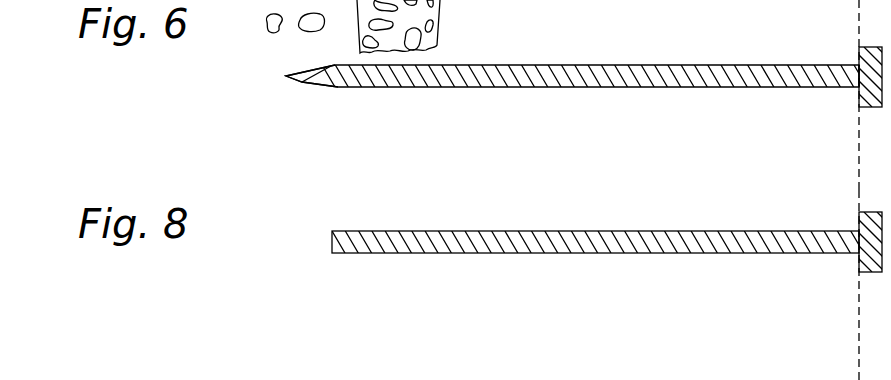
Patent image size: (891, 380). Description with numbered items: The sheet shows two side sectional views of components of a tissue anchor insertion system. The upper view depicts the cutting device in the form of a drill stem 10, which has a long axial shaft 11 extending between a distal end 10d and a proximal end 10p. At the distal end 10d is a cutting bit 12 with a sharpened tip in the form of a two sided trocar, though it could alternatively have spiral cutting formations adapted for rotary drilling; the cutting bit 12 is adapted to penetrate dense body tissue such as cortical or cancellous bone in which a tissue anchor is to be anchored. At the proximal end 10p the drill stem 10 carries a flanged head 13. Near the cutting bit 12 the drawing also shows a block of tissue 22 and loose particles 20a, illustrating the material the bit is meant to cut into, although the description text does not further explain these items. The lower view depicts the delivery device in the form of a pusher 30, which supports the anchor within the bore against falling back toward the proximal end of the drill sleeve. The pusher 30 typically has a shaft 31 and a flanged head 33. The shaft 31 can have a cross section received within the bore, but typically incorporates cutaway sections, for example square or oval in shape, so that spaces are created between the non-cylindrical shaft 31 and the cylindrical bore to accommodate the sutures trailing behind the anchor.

In FIG. 6, the drill stem 10 is at (615, 55).
In FIG. 6, the long axial shaft 11 is at (541, 78).
In FIG. 6, the cutting bit 12 is at (300, 81).
In FIG. 6, the flanged head 13 is at (859, 48).
In FIG. 6, the distal end 10d is at (314, 109).
In FIG. 6, the proximal end 10p is at (837, 102).
In FIG. 6, the particles 20a is at (279, 16).
In FIG. 6, the tissue block 22 is at (425, 26).
In FIG. 8, the pusher 30 is at (582, 217).
In FIG. 8, the shaft 31 is at (610, 243).
In FIG. 8, the flanged head 33 is at (860, 218).